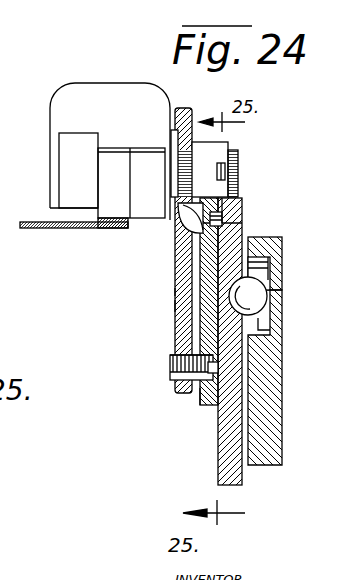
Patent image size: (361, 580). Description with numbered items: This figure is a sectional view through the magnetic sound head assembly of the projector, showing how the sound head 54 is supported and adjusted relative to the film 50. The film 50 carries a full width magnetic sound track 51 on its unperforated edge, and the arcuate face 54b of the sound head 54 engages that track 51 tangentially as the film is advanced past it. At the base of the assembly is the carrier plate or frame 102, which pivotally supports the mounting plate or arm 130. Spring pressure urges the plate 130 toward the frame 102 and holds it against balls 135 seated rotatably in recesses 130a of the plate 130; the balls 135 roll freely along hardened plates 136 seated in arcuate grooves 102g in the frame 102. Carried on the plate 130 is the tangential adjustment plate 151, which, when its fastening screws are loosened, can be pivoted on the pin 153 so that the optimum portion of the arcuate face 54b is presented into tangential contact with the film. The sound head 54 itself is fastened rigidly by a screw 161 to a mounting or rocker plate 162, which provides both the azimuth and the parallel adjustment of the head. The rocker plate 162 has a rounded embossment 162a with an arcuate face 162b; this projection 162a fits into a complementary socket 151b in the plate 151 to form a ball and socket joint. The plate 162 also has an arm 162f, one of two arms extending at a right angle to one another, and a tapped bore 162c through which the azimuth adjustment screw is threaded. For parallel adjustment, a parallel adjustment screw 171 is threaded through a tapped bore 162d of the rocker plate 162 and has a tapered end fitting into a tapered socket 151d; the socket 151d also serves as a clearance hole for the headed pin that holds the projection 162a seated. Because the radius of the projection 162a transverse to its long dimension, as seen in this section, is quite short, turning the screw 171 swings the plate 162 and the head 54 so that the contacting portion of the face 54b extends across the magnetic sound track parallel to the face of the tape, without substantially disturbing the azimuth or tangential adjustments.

The magnetic sound head 54 is at (105, 97).
The arcuate face 54b is at (108, 182).
The film 50 is at (66, 232).
The full width magnetic sound track 51 is at (108, 230).
The screw 161 is at (224, 152).
The tapped bore 162c is at (203, 194).
The pin 153 is at (238, 201).
The socket 151b is at (232, 240).
The arcuate grooves 102g is at (288, 242).
The hardened plates 136 is at (270, 315).
The balls 135 is at (270, 335).
The rounded embossment 162a is at (184, 228).
The arcuate face 162b is at (176, 258).
The recesses 130a is at (175, 292).
The arm 162f is at (175, 306).
The mounting or rocker plate 162 is at (175, 323).
The tapped bore 162d is at (175, 352).
The parallel adjustment screw 171 is at (170, 376).
The tapered socket 151d is at (200, 388).
The tangential adjustment plate 151 is at (213, 392).
The mounting plate or arm 130 is at (225, 448).
The carrier plate or frame 102 is at (270, 455).